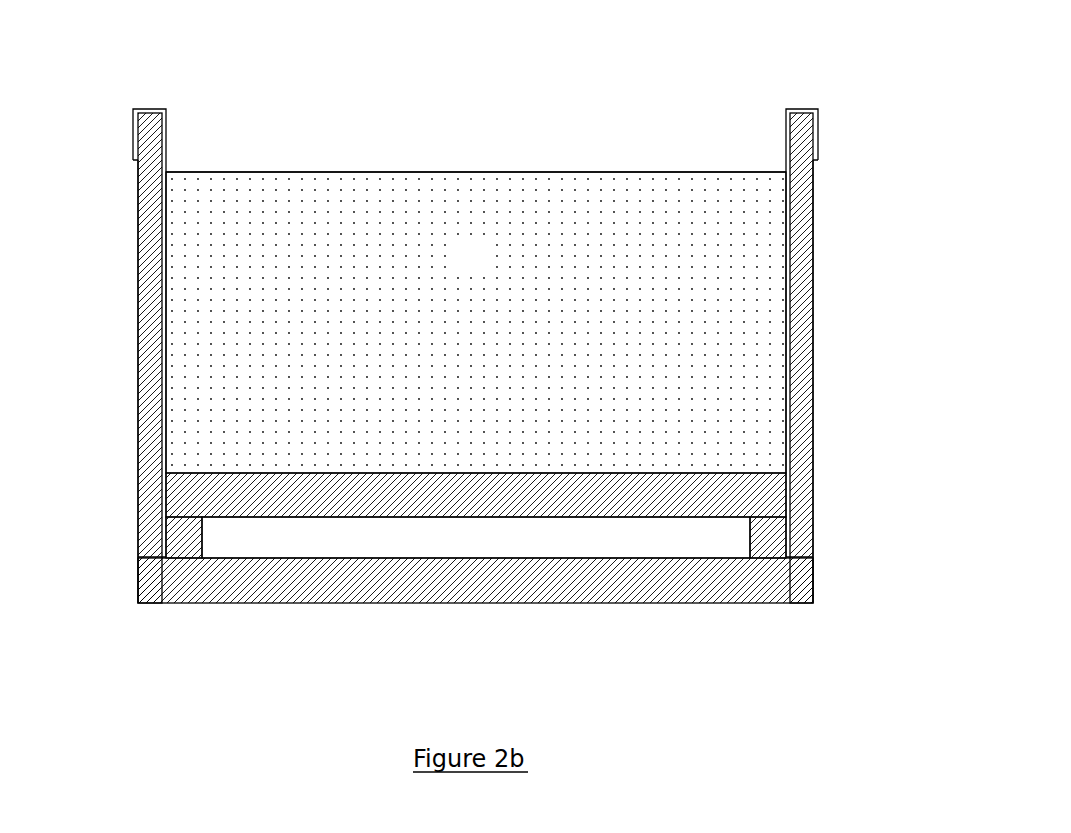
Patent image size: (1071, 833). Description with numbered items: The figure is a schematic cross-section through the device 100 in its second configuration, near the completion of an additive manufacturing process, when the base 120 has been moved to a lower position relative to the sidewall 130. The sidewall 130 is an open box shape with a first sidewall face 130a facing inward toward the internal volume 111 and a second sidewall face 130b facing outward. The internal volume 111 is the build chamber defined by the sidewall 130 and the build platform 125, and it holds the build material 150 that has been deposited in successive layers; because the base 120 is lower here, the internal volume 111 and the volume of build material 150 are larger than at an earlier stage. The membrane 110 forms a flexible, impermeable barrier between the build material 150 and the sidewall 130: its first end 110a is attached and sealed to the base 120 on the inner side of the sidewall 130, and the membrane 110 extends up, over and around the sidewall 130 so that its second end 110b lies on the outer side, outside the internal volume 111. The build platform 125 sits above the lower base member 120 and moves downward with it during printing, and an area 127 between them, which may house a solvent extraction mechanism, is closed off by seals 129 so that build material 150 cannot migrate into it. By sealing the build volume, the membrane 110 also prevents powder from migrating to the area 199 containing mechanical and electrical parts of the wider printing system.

The device 100 is at (476, 353).
The membrane 110 is at (476, 365).
The first end of the membrane 110a is at (160, 556).
The second end of the membrane 110b is at (135, 160).
The internal volume 111 is at (488, 129).
The base 120 is at (428, 580).
The build platform 125 is at (556, 493).
The area 127 is at (305, 548).
The seals 129 is at (183, 543).
The sidewall 130 is at (476, 356).
The first sidewall face 130a is at (163, 257).
The second sidewall face 130b is at (883, 273).
The build material 150 is at (488, 265).
The area 199 is at (357, 726).